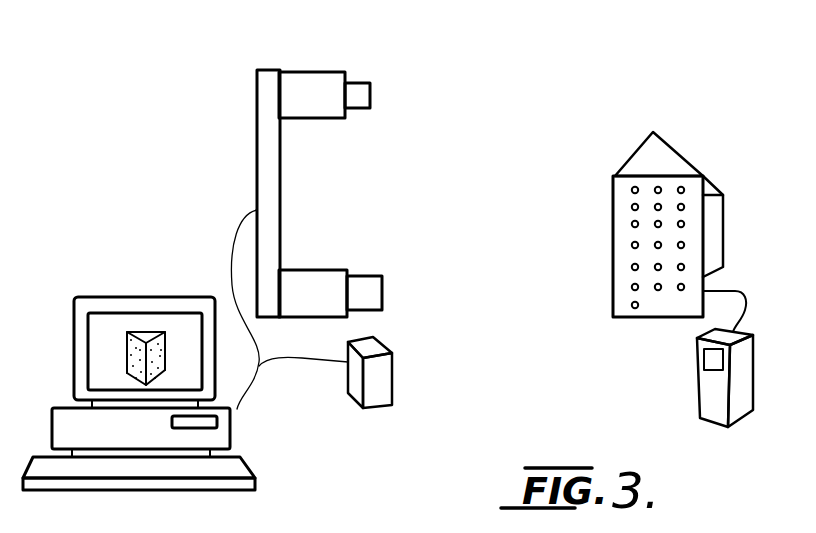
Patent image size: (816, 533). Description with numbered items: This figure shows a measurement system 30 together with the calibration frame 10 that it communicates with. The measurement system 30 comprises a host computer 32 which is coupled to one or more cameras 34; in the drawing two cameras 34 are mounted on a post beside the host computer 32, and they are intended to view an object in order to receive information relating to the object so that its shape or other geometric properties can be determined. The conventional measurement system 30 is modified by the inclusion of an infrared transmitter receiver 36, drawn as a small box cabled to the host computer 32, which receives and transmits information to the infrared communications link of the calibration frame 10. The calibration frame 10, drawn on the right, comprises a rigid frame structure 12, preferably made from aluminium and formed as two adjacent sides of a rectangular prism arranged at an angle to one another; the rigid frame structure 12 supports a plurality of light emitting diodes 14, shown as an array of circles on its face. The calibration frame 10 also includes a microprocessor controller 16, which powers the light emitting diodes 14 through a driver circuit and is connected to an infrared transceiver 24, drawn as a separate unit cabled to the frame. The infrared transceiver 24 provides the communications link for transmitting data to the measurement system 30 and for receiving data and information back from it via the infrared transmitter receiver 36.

The calibration frame 10 is at (601, 168).
The rigid frame structure 12 is at (700, 269).
The light emitting diodes 14 is at (631, 245).
The microprocessor controller 16 is at (712, 233).
The infrared transceiver 24 is at (697, 380).
The measurement system 30 is at (203, 156).
The host computer 32 is at (106, 312).
The cameras 34 is at (316, 95).
The infrared transmitter receiver 36 is at (383, 380).